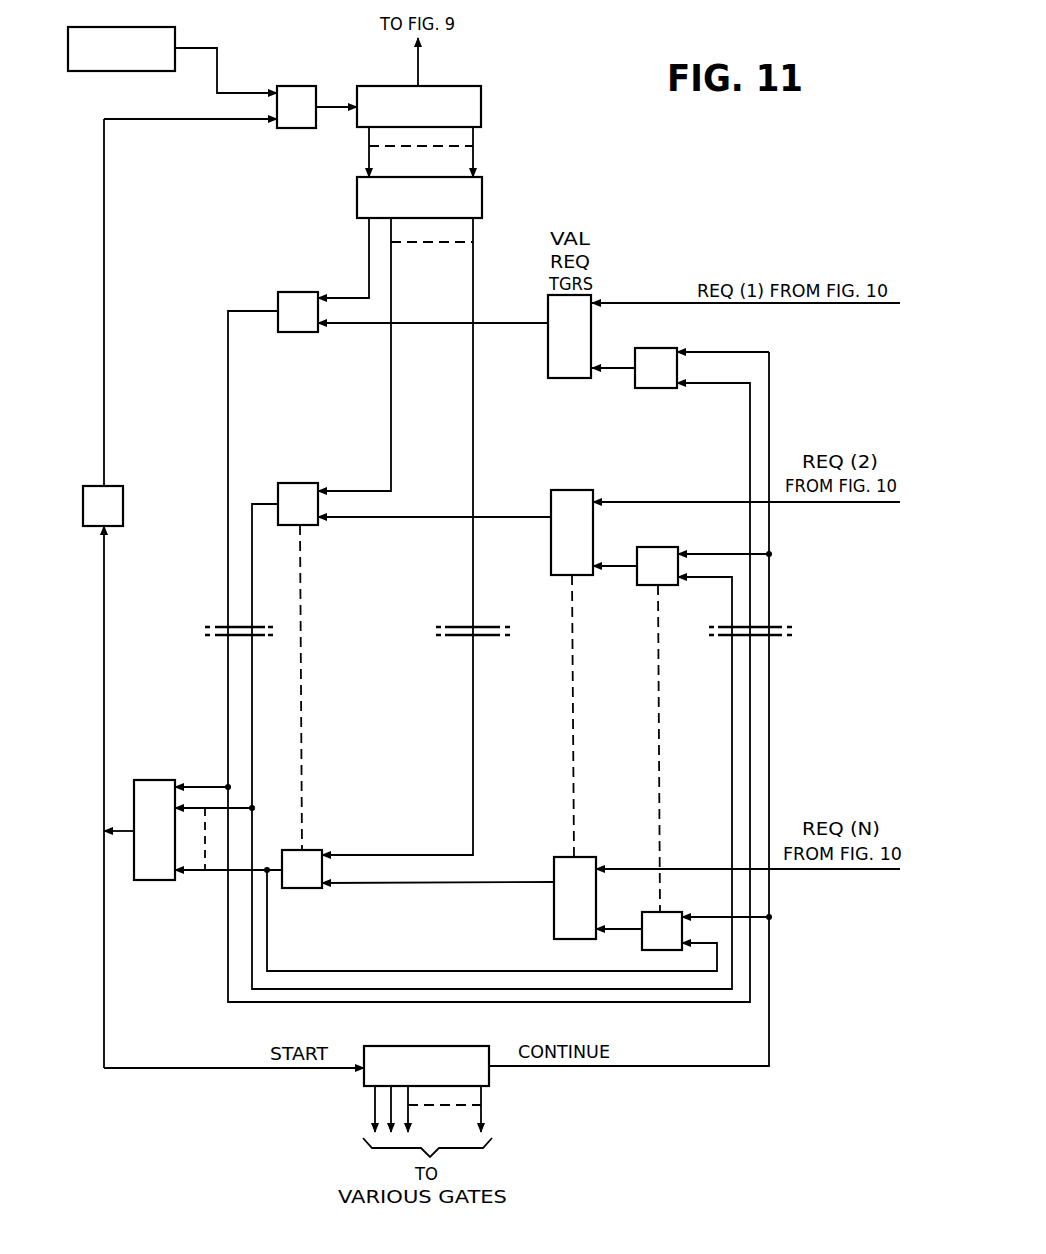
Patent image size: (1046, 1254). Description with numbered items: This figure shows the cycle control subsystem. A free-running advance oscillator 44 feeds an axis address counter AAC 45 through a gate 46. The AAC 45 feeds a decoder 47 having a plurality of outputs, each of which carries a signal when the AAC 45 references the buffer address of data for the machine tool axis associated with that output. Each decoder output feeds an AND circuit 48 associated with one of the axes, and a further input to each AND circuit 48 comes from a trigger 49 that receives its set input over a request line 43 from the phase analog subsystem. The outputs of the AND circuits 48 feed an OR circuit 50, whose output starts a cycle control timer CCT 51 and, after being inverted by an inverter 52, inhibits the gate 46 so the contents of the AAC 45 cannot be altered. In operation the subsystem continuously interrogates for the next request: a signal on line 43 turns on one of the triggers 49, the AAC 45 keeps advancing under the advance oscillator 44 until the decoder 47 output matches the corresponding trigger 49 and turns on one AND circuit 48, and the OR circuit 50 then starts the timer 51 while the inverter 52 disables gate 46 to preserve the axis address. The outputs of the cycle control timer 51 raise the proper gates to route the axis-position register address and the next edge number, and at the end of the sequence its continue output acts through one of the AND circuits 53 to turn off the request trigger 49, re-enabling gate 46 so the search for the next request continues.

The request line 43 is at (630, 300).
The advance oscillator 44 is at (173, 35).
The axis address counter AAC 45 is at (475, 103).
The gate 46 is at (293, 87).
The decoder 47 is at (365, 196).
The AND circuit 48 is at (285, 292).
The trigger 49 is at (573, 373).
The OR circuit 50 is at (152, 780).
The cycle control timer CCT 51 is at (483, 1076).
The inverter 52 is at (117, 490).
The AND circuit 53 is at (665, 386).